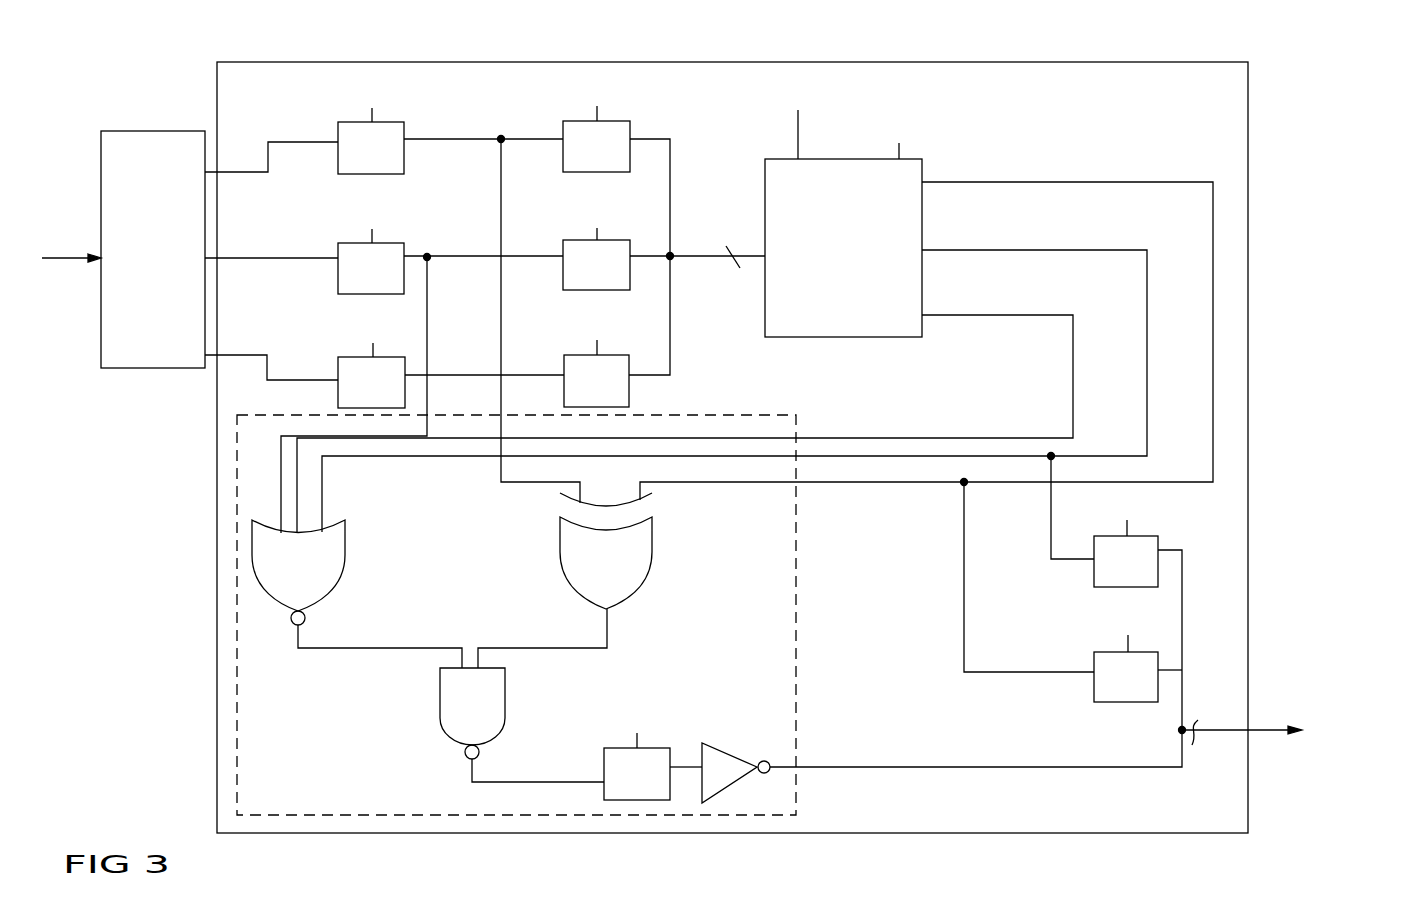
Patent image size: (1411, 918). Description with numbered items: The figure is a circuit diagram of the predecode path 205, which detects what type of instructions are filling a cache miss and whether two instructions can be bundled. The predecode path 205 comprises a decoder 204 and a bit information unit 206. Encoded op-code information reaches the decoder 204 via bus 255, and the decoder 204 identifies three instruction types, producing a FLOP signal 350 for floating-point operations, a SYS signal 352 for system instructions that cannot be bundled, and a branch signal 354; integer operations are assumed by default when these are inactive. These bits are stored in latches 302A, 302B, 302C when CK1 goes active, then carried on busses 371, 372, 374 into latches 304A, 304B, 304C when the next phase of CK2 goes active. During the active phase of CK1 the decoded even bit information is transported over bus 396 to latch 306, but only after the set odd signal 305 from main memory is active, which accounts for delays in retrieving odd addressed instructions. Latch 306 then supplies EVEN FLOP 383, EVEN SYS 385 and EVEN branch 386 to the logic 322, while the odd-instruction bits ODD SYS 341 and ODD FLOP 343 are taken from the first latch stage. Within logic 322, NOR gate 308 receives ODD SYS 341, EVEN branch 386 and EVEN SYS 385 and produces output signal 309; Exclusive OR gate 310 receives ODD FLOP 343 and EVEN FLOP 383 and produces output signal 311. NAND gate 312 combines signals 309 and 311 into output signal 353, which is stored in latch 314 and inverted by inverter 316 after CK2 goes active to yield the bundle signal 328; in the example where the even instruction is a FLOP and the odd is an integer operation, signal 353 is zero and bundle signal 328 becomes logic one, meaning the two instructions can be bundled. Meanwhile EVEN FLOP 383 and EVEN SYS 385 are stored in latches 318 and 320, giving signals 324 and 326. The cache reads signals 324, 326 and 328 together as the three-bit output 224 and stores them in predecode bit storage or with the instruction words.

The predecode path 205 is at (176, 96).
The bus 255 is at (62, 248).
The decoder 204 is at (172, 266).
The bit information unit 206 is at (830, 61).
The FLOP signal 350 is at (279, 143).
The SYS signal 352 is at (280, 262).
The branch signal 354 is at (283, 378).
The latch 302A is at (398, 158).
The latch 302B is at (398, 282).
The latch 302C is at (399, 396).
The bus 371 is at (432, 141).
The bus 372 is at (441, 262).
The bus 374 is at (487, 377).
The ODD SYS signal 341 is at (427, 313).
The ODD FLOP signal 343 is at (502, 292).
The latch 304A is at (623, 155).
The latch 304B is at (623, 275).
The latch 304C is at (624, 392).
The bus 396 is at (692, 257).
The set odd signal 305 is at (847, 121).
The latch 306 is at (872, 254).
The EVEN FLOP signal 383 is at (1167, 181).
The EVEN SYS signal 385 is at (1150, 341).
The EVEN branch signal 386 is at (1083, 433).
The logic 322 is at (665, 414).
The NOR gate 308 is at (318, 569).
The Exclusive OR gate 310 is at (632, 569).
The output signal 309 is at (370, 648).
The output signal 311 is at (571, 647).
The NAND gate 312 is at (498, 707).
The output signal 353 is at (536, 781).
The latch 314 is at (658, 785).
The inverter 316 is at (752, 764).
The bundle signal 328 is at (826, 767).
The latch 320 is at (1150, 576).
The latch 318 is at (1150, 690).
The signal 326 is at (1168, 548).
The signal 324 is at (1172, 650).
The signals 224 is at (1263, 725).